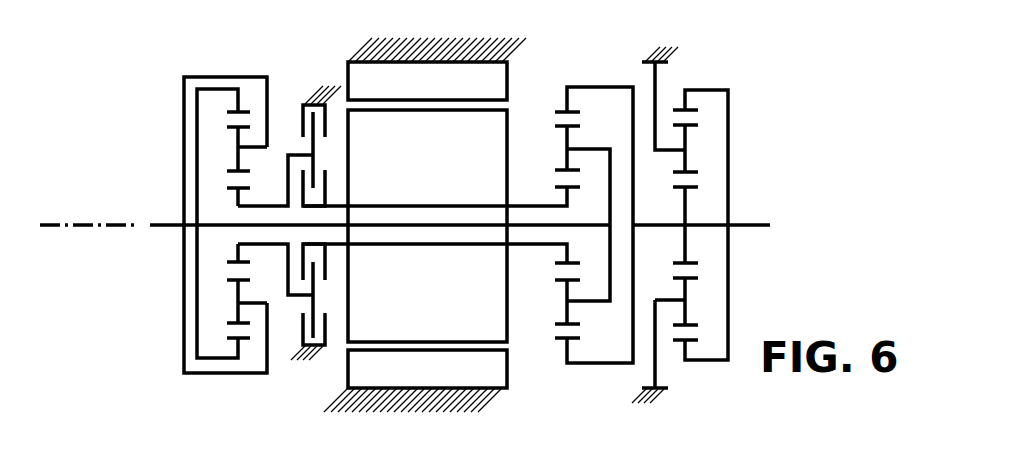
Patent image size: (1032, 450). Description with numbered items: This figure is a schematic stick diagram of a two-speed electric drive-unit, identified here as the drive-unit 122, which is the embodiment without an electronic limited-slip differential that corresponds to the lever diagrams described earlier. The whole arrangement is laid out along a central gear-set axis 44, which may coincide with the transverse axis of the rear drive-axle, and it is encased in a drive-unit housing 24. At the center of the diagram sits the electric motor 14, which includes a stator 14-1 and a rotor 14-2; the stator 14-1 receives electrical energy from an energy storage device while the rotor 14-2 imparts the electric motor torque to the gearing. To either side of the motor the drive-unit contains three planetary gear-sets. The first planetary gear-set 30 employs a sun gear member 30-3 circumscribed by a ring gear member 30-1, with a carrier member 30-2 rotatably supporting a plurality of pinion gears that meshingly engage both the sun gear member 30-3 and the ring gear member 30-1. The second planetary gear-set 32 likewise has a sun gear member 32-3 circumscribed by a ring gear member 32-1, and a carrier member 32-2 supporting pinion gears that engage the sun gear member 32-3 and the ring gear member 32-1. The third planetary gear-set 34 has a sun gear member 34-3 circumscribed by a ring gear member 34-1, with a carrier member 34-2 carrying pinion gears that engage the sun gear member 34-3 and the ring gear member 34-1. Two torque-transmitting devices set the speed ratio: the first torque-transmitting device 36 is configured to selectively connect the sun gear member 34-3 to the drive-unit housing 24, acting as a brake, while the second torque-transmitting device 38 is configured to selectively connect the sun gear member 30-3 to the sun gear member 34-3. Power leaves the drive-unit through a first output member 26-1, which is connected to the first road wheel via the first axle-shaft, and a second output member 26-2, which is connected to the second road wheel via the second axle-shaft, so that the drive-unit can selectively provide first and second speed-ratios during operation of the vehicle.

The drive-unit 122 is at (117, 81).
The electric motor 14 is at (509, 85).
The stator 14-1 is at (406, 95).
The rotor 14-2 is at (406, 176).
The drive-unit housing 24 is at (308, 362).
The first output member 26-1 is at (750, 228).
The second output member 26-2 is at (163, 227).
The first planetary gear-set 30 is at (577, 181).
The ring gear member 30-1 is at (562, 342).
The carrier member 30-2 is at (600, 304).
The sun gear member 30-3 is at (553, 228).
The second planetary gear-set 32 is at (665, 339).
The ring gear member 32-1 is at (686, 113).
The carrier member 32-2 is at (657, 88).
The sun gear member 32-3 is at (688, 263).
The third planetary gear-set 34 is at (272, 366).
The ring gear member 34-1 is at (218, 88).
The carrier member 34-2 is at (268, 108).
The sun gear member 34-3 is at (235, 263).
The first torque-transmitting device 36 is at (302, 322).
The second torque-transmitting device 38 is at (327, 185).
The central gear-set axis 44 is at (88, 222).